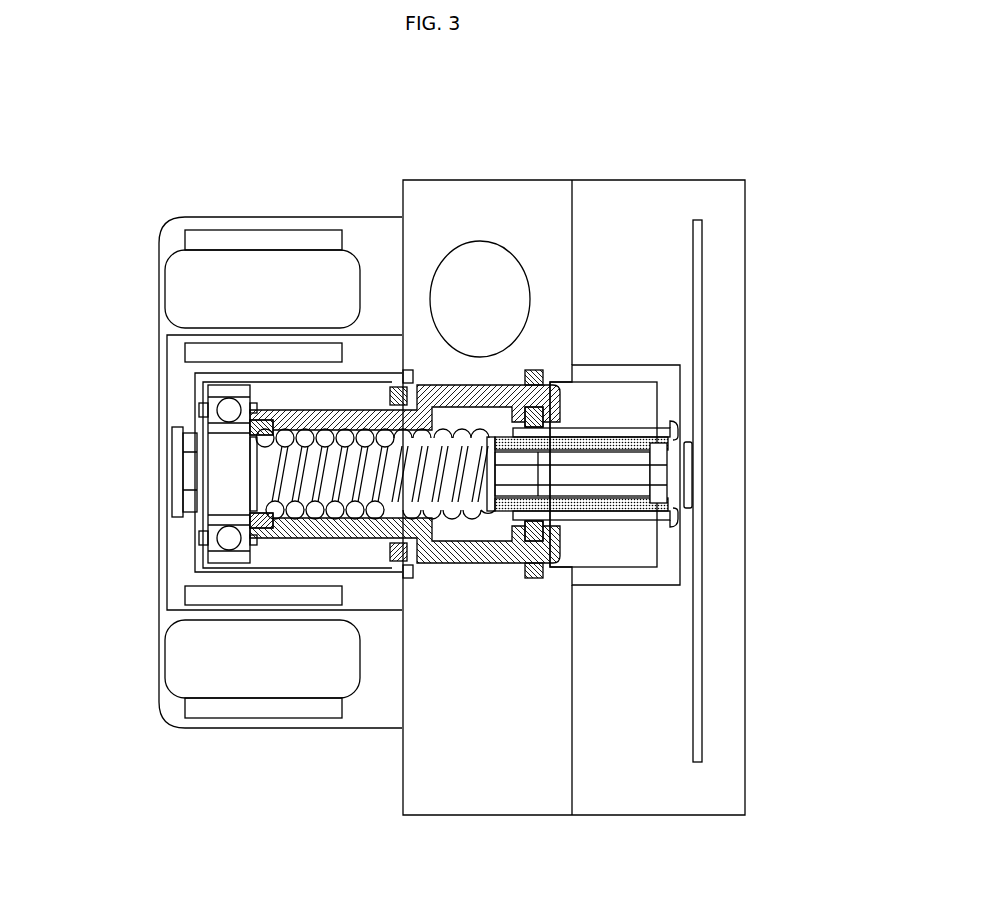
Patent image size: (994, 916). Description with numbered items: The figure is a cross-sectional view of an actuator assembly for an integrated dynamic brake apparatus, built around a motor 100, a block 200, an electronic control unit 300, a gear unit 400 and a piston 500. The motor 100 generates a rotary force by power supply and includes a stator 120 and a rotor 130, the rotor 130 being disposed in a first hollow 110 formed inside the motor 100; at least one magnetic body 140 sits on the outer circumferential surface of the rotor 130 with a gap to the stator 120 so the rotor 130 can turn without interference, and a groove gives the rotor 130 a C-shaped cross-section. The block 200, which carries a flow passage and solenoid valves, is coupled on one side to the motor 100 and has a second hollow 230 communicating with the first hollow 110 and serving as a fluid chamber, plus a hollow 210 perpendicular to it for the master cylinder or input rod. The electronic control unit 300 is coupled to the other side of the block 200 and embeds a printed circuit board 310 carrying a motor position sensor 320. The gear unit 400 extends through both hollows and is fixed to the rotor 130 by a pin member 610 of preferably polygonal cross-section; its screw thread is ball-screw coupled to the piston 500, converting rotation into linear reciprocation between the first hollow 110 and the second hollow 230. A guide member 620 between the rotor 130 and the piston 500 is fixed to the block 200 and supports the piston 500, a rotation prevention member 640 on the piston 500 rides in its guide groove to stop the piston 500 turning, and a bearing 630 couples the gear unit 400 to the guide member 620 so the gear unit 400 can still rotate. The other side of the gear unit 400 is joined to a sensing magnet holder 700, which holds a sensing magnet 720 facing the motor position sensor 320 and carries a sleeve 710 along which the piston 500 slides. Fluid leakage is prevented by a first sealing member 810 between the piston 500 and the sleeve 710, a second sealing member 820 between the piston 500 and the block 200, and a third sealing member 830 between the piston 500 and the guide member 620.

The motor 100 is at (150, 190).
The first hollow 110 is at (378, 348).
The stator 120 is at (243, 272).
The rotor 130 is at (190, 388).
The magnetic body 140 is at (192, 350).
The block 200 is at (543, 205).
The hollow 210 is at (496, 258).
The second hollow 230 is at (613, 553).
The electronic control unit 300 is at (725, 197).
The printed circuit board 310 is at (703, 258).
The motor position sensor 320 is at (688, 475).
The gear unit 400 is at (240, 455).
The piston 500 is at (442, 393).
The pin member 610 is at (177, 473).
The guide member 620 is at (262, 553).
The bearing 630 is at (227, 527).
The rotation prevention member 640 is at (233, 550).
The sensing magnet holder 700 is at (640, 423).
The sleeve 710 is at (633, 520).
The sensing magnet 720 is at (660, 455).
The first sealing member 810 is at (558, 382).
The second sealing member 820 is at (537, 364).
The third sealing member 830 is at (388, 566).